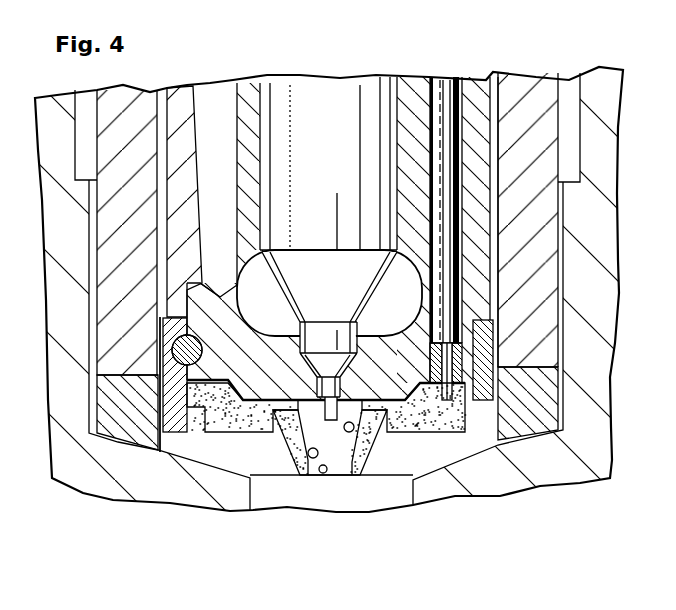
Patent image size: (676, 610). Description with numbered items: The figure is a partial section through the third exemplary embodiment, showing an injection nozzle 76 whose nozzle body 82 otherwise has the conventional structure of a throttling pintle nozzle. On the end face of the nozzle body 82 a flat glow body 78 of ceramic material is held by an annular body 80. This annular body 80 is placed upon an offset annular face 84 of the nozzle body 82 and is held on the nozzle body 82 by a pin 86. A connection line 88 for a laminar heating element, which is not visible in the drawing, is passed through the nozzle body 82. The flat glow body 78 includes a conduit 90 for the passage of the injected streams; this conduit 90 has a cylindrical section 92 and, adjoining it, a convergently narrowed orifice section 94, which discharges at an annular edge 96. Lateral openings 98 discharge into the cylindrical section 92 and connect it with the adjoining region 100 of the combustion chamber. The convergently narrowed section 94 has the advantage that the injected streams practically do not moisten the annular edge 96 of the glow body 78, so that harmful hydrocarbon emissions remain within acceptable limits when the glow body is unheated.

The injection nozzle 76 is at (303, 72).
The flat glow body 78 is at (392, 380).
The annular body 80 is at (180, 462).
The nozzle body 82 is at (187, 217).
The offset annular face 84 is at (203, 283).
The pin 86 is at (192, 345).
The connection line 88 is at (445, 77).
The conduit 90 is at (342, 460).
The cylindrical section 92 is at (354, 461).
The convergently narrowed orifice section 94 is at (304, 463).
The annular edge 96 is at (327, 474).
The lateral openings 98 is at (280, 437).
The adjoining region of the combustion chamber 100 is at (473, 450).